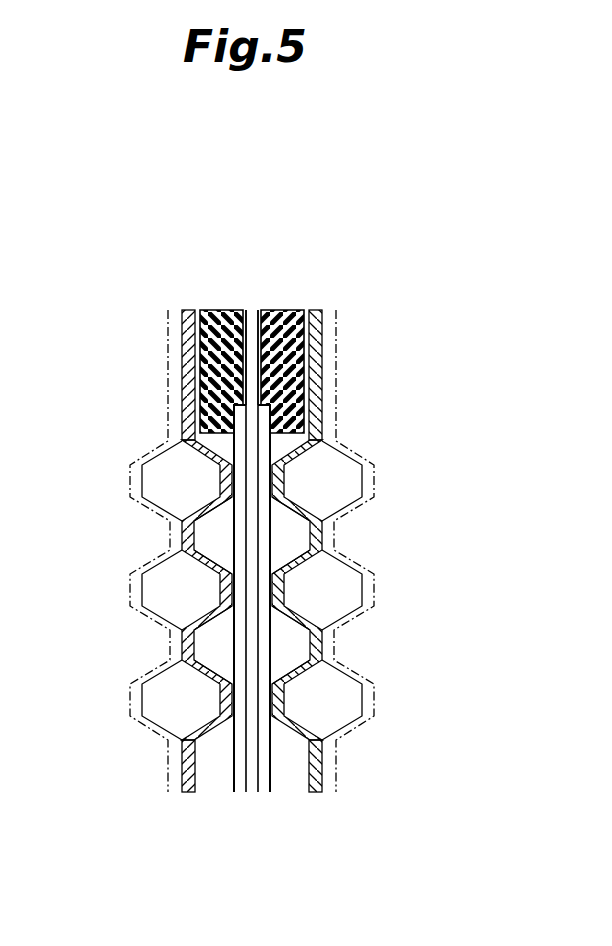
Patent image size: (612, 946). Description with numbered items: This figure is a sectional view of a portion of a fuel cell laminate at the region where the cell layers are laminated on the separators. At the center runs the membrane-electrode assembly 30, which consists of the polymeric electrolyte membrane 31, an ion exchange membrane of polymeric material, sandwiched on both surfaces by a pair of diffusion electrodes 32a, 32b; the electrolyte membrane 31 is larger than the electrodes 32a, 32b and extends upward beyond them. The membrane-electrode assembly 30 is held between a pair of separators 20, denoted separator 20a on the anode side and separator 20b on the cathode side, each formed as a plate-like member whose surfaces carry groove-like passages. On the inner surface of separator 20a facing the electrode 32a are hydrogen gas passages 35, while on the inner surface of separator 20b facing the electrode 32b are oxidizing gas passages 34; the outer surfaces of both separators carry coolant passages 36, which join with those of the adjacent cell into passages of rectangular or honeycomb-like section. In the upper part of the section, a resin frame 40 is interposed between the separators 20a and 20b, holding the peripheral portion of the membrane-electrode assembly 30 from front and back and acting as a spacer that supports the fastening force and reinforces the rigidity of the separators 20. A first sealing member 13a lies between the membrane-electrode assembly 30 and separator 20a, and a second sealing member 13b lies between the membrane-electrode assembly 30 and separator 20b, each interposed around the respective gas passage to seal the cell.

The separators 20 is at (137, 458).
The separator 20a is at (186, 309).
The separator 20b is at (314, 791).
The first sealing member 13a is at (247, 309).
The second sealing member 13b is at (260, 309).
The polymeric electrolyte membrane 31 is at (253, 309).
The resin frame 40 is at (222, 309).
The coolant passage 36 is at (195, 495).
The hydrogen gas passage 35 is at (230, 549).
The oxidizing gas passage 34 is at (306, 549).
The membrane-electrode assembly 30 is at (267, 800).
The anode side diffusion electrode 32a is at (233, 786).
The cathode side diffusion electrode 32b is at (271, 788).